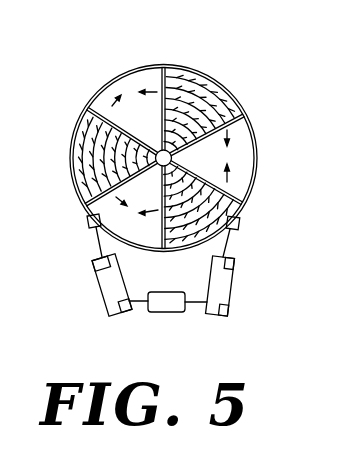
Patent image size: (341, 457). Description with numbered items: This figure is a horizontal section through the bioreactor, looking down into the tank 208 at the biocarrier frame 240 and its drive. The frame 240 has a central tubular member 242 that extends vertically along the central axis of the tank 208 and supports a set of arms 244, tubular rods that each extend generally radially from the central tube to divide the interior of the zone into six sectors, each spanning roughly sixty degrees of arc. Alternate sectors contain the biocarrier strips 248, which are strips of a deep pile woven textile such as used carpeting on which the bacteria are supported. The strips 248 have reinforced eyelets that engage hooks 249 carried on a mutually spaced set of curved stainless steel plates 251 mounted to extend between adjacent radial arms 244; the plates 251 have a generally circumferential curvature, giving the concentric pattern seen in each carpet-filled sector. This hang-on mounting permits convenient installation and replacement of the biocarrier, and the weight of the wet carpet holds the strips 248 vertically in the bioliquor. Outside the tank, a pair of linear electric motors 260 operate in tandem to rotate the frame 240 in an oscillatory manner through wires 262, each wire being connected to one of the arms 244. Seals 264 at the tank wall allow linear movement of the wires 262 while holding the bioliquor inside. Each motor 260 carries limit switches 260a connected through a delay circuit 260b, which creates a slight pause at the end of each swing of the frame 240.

The tank 208 is at (236, 104).
The frame 240 is at (236, 134).
The central tubular member 242 is at (209, 156).
The arms 244 is at (94, 102).
The strips 248 is at (199, 78).
The hooks 249 is at (196, 82).
The curved stainless steel plates 251 is at (190, 117).
The linear electric motors 260 is at (99, 286).
The limit switches 260a is at (94, 262).
The delay circuit 260b is at (156, 292).
The wires 262 is at (72, 157).
The seals 264 is at (88, 222).